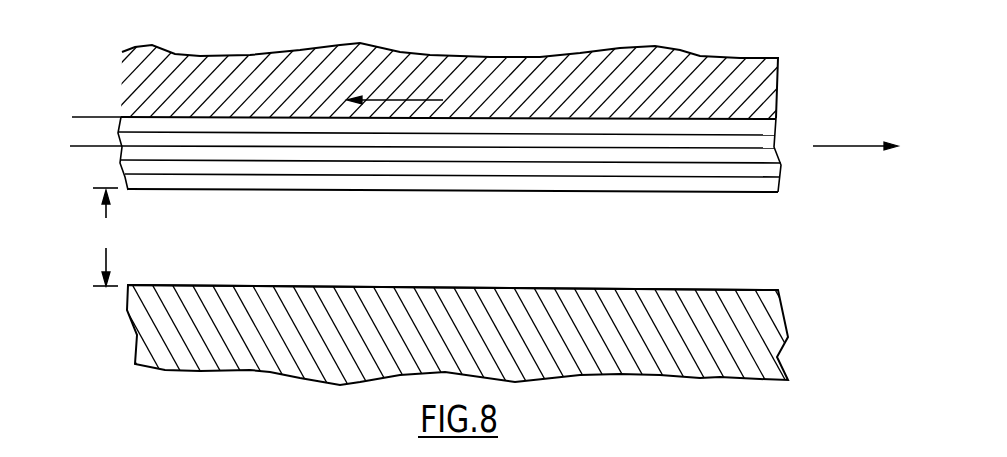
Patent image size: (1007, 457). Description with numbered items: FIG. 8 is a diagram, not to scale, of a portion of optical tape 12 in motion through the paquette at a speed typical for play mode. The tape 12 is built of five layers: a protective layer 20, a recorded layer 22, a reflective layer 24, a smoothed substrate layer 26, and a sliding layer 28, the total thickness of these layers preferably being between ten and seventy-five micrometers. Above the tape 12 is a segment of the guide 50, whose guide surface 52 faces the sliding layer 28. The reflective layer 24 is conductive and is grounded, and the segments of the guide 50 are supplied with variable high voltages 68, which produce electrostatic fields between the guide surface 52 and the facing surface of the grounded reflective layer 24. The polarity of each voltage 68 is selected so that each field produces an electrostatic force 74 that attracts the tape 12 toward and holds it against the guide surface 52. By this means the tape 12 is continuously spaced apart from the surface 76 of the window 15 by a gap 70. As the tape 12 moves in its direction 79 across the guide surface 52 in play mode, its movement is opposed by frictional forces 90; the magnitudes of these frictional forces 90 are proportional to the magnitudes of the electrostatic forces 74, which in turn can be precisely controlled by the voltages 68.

The guide 50 is at (712, 67).
The guide surface 52 is at (742, 118).
The sliding layer 28 is at (755, 131).
The smoothed substrate layer 26 is at (767, 145).
The reflective layer 24 is at (752, 159).
The recorded layer 22 is at (770, 172).
The protective layer 20 is at (753, 190).
The tape 12 is at (683, 193).
The direction 79 is at (843, 148).
The frictional forces 90 is at (384, 98).
The electrostatic force 74 is at (73, 122).
The variable high voltages 68 is at (72, 137).
The gap 70 is at (105, 237).
The window 15 is at (760, 348).
The surface of the window 76 is at (692, 290).